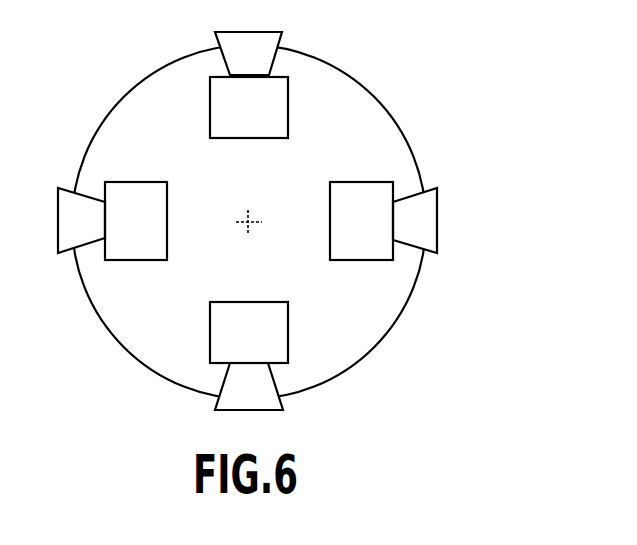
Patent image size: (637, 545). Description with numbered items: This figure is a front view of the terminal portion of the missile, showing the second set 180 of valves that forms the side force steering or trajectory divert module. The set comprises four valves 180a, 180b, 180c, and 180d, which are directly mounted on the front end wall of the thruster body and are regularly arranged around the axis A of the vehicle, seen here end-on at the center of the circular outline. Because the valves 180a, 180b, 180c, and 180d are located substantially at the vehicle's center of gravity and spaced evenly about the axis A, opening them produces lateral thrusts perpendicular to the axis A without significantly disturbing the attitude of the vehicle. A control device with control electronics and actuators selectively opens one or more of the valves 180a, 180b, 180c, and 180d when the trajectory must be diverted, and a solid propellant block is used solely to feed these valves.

The second set of valves 180 is at (436, 112).
The valve 180a is at (263, 110).
The valve 180b is at (360, 250).
The valve 180c is at (227, 332).
The valve 180d is at (137, 197).
The axis A is at (249, 221).